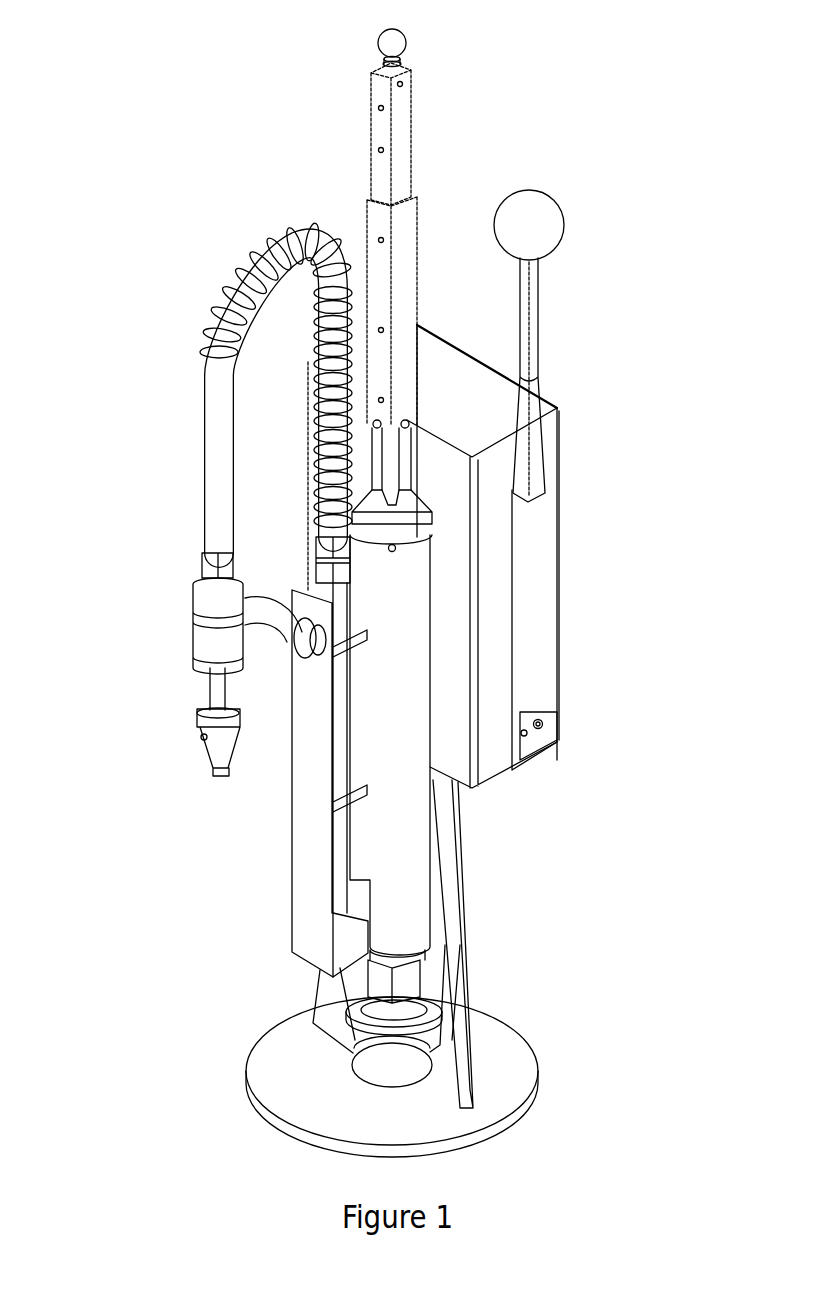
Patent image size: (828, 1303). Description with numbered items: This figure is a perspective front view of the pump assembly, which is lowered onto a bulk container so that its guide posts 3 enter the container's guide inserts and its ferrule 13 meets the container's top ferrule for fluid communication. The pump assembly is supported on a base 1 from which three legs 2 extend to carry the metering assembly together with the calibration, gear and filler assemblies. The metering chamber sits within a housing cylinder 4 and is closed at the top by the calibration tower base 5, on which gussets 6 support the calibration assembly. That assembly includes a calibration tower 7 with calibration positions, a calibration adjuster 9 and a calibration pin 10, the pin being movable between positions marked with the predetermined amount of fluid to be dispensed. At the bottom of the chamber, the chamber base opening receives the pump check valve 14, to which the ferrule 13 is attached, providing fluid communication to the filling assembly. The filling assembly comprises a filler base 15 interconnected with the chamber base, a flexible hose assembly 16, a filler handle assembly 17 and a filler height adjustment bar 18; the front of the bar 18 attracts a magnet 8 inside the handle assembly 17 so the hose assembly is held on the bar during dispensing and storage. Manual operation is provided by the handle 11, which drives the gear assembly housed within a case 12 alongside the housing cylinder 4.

The base 1 is at (525, 1068).
The legs 2 is at (445, 917).
The guide posts 3 is at (335, 962).
The housing cylinder 4 is at (405, 856).
The calibration tower base 5 is at (432, 541).
The gussets 6 is at (420, 500).
The calibration tower 7 is at (415, 331).
The magnet 8 is at (290, 618).
The calibration adjuster 9 is at (414, 50).
The calibration pin 10 is at (375, 108).
The handle 11 is at (538, 640).
The case 12 is at (480, 408).
The ferrule 13 is at (365, 1008).
The pump check valve 14 is at (412, 970).
The filler base 15 is at (337, 938).
The flexible hose assembly 16 is at (212, 400).
The filler handle assembly 17 is at (255, 612).
The filler height adjustment bar 18 is at (305, 735).